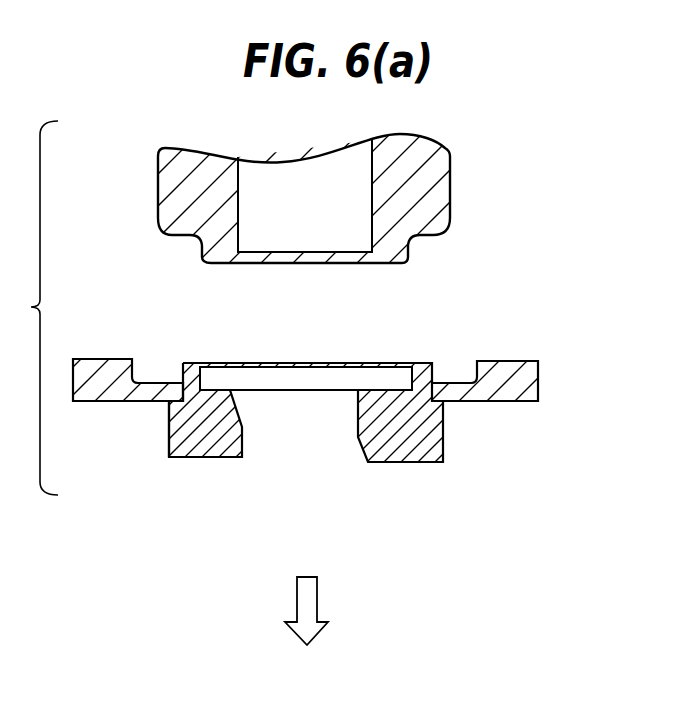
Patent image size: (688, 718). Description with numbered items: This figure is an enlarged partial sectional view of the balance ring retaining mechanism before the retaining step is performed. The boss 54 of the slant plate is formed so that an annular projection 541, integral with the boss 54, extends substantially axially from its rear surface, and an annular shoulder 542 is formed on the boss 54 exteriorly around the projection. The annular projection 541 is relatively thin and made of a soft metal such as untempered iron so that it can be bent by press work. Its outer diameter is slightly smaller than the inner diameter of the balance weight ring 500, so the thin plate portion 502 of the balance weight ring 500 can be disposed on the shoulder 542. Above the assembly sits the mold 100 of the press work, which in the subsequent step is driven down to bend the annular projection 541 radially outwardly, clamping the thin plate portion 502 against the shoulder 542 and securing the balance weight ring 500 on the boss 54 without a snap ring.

The mold 100 is at (444, 152).
The balance weight ring 500 is at (105, 362).
The thin plate portion 502 is at (148, 391).
The boss 54 is at (182, 458).
The annular projection 541 is at (193, 362).
The shoulder 542 is at (172, 402).